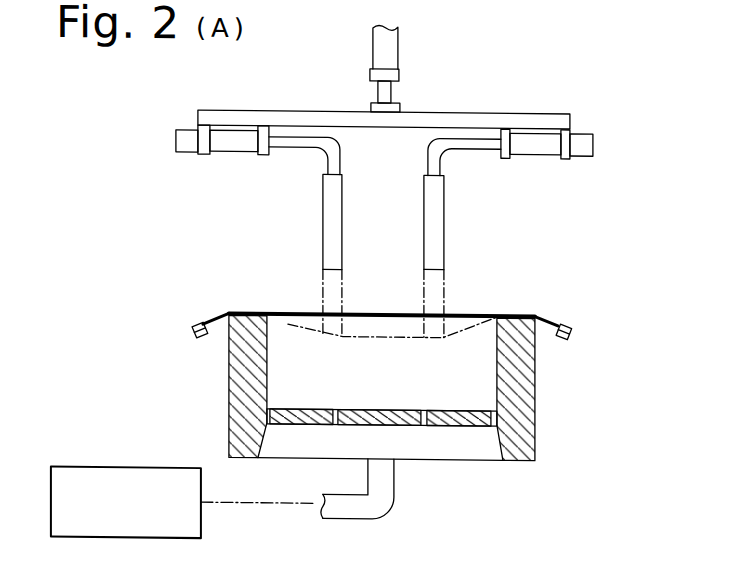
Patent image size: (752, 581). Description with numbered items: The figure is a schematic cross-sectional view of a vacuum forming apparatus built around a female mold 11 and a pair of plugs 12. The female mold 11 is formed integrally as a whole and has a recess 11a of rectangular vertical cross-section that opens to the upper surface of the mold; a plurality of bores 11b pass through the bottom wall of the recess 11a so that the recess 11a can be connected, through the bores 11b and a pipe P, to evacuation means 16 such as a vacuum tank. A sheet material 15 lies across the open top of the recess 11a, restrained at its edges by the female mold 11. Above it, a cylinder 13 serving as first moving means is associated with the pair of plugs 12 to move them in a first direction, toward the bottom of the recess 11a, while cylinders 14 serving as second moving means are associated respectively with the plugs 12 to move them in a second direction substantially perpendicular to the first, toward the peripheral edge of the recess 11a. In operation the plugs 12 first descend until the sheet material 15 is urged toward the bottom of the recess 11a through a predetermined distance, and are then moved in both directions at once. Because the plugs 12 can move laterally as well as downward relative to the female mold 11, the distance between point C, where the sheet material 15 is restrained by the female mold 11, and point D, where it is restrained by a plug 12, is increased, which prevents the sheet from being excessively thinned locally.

The female mold 11 is at (537, 410).
The recess 11a is at (483, 384).
The bores 11b is at (426, 421).
The plugs 12 is at (325, 213).
The cylinder 13 is at (400, 51).
The cylinders 14 is at (188, 128).
The sheet material 15 is at (292, 321).
The evacuation means 16 is at (133, 466).
The pipe P is at (355, 516).
The point C is at (290, 321).
The point D is at (325, 333).